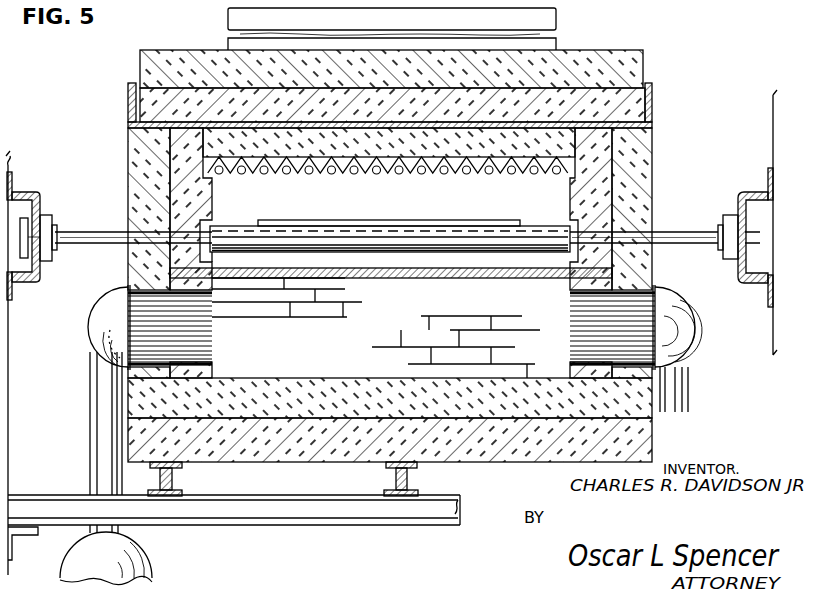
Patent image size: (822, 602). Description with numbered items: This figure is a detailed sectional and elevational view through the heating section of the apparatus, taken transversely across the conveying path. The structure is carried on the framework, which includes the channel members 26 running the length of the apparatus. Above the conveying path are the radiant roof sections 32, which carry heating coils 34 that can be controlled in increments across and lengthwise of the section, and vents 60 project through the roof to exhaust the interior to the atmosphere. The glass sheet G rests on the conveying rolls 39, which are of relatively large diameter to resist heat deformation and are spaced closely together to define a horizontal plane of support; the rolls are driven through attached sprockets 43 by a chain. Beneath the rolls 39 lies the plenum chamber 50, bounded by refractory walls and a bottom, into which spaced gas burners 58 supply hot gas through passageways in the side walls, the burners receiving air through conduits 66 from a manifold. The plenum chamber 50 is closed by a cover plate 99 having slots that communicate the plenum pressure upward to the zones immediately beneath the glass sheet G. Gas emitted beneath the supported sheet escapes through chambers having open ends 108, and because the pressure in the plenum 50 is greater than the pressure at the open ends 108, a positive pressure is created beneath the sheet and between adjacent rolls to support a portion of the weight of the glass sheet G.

The vents 60 is at (557, 20).
The channel members 26 is at (40, 205).
The sprockets 43 is at (25, 258).
The gas burners 58 is at (82, 333).
The conduits 66 is at (90, 452).
The open ends 108 is at (220, 258).
The plenum chamber 50 is at (376, 328).
The plenum chamber cover plate 99 is at (524, 276).
The radiant roof sections 32 is at (347, 174).
The heating coils 34 is at (490, 175).
The conveying rolls 39 is at (238, 225).
The glass sheet G is at (422, 220).